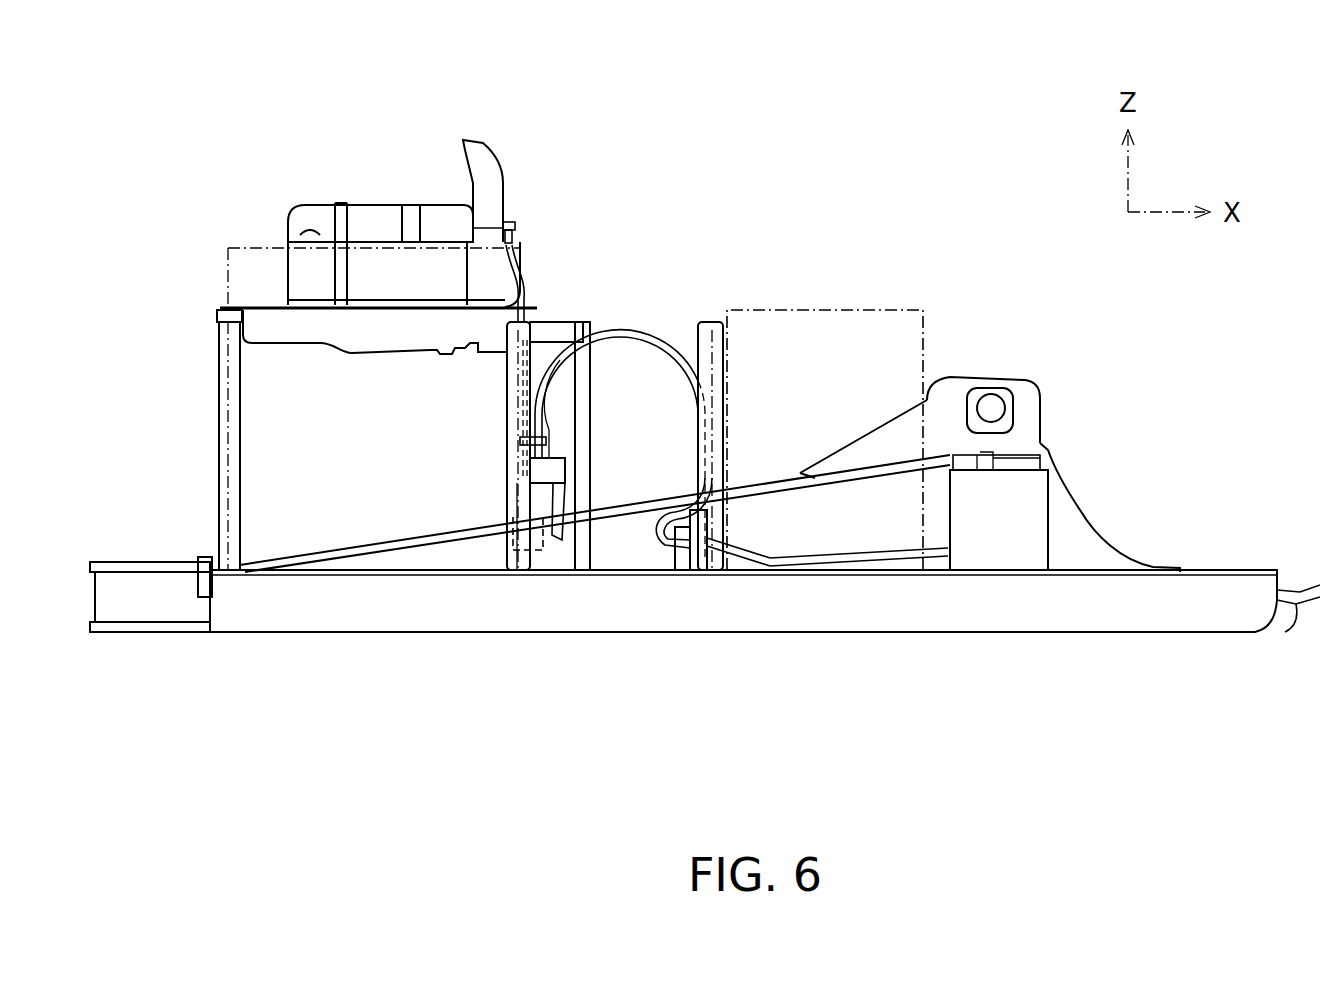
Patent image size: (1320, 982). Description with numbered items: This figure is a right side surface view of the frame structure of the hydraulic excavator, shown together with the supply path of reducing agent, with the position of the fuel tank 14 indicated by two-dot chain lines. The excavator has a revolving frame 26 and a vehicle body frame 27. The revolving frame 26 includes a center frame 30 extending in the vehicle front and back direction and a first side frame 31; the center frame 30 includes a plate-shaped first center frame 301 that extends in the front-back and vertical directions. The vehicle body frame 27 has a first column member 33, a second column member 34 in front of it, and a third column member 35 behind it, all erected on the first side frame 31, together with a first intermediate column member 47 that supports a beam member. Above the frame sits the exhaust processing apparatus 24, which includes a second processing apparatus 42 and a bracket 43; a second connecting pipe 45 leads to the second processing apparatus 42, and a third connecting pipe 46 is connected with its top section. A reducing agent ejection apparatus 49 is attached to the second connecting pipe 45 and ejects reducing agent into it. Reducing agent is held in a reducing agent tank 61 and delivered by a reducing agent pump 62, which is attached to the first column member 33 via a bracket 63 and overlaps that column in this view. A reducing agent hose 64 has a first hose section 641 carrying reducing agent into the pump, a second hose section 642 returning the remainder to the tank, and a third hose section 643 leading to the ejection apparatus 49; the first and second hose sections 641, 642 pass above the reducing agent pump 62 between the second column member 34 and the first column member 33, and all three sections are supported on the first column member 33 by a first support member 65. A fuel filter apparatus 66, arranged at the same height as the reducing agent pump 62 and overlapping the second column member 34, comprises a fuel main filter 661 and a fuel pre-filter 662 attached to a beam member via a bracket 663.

The fuel tank 14 is at (818, 308).
The exhaust processing apparatus 24 is at (398, 188).
The revolving frame 26 is at (705, 647).
The vehicle body frame 27 is at (413, 399).
The center frame 30 is at (710, 421).
The first center frame 301 is at (972, 377).
The first side frame 31 is at (1082, 618).
The first column member 33 is at (507, 370).
The second column member 34 is at (705, 320).
The third column member 35 is at (217, 456).
The second processing apparatus 42 is at (298, 273).
The bracket 43 is at (290, 335).
The second connecting pipe 45 is at (375, 212).
The third connecting pipe 46 is at (480, 165).
The first intermediate column member 47 is at (585, 368).
The reducing agent ejection apparatus 49 is at (515, 228).
The reducing agent tank 61 is at (982, 548).
The reducing agent pump 62 is at (548, 540).
The bracket 63 is at (568, 467).
The reducing agent hose 64 is at (532, 391).
The first hose section 641 is at (520, 440).
The second hose section 642 is at (532, 396).
The third hose section 643 is at (568, 325).
The first support member 65 is at (520, 450).
The fuel filter apparatus 66 is at (771, 548).
The fuel main filter 661 is at (632, 493).
The fuel pre-filter 662 is at (675, 540).
The bracket 663 is at (745, 525).